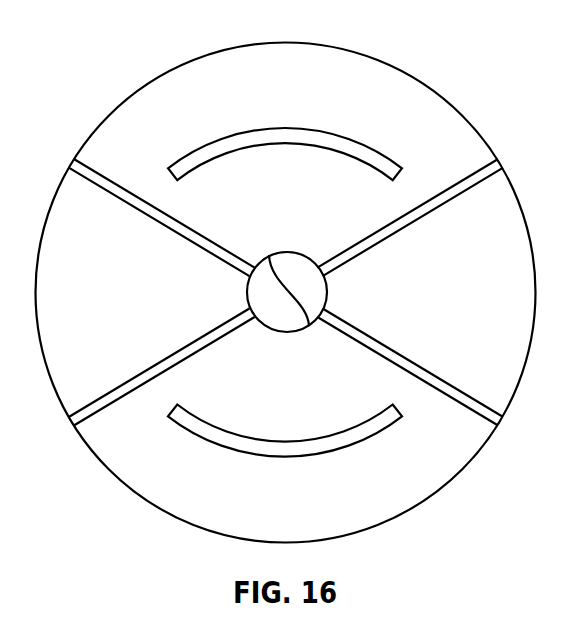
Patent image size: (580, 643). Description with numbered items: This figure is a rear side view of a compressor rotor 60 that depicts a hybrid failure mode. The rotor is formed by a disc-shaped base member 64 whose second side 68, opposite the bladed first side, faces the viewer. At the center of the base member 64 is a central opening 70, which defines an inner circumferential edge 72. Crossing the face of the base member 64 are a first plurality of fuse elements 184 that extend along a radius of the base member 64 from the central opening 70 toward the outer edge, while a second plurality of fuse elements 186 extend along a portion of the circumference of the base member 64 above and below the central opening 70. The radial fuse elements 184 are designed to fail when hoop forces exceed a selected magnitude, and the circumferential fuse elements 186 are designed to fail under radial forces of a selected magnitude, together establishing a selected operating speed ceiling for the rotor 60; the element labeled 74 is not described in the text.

The compressor rotor 60 is at (276, 283).
The base member 64 is at (96, 126).
The second side 68 is at (318, 80).
The central opening 70 is at (258, 294).
The inner circumferential edge 72 is at (309, 326).
The radial spoke 74 is at (75, 430).
The first plurality of fuse elements 184 is at (458, 236).
The second plurality of fuse elements 186 is at (217, 88).